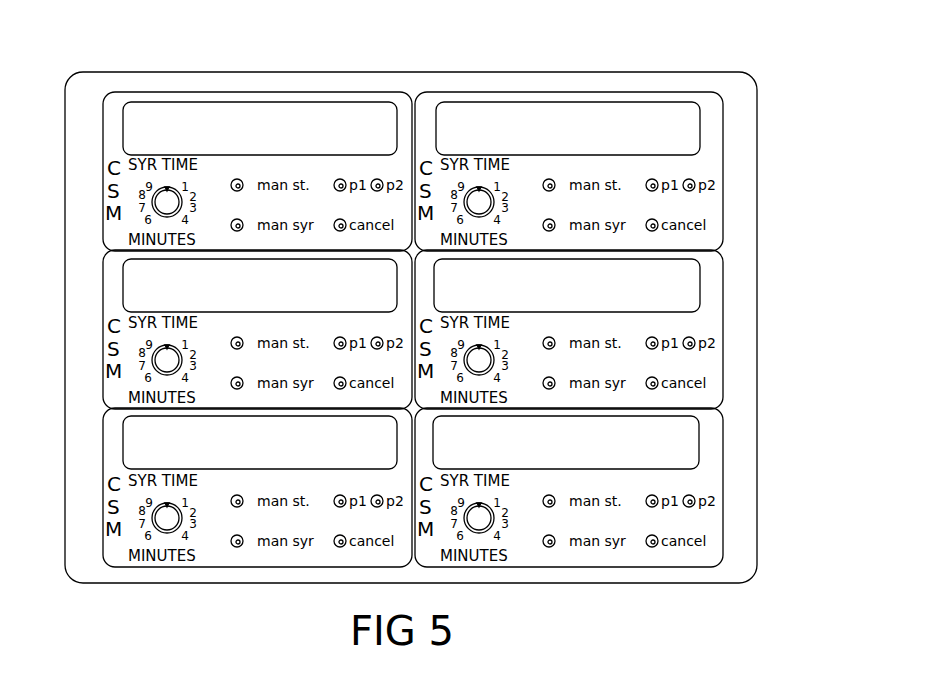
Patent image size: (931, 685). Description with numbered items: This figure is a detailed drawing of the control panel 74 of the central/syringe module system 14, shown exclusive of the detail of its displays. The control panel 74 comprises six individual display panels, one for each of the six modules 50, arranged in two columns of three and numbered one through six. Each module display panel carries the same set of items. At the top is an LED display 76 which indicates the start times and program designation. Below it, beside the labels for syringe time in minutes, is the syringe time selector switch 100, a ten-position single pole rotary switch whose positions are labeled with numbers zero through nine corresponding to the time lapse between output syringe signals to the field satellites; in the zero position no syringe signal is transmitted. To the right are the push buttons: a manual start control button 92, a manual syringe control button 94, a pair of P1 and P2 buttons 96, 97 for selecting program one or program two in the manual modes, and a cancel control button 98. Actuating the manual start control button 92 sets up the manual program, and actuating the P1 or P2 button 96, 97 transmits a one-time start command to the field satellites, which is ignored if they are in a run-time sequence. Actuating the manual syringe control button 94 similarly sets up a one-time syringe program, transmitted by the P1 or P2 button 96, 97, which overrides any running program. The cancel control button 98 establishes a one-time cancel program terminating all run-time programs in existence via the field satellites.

The central/syringe module system 14 is at (485, 72).
The control panel 74 is at (592, 77).
The module 50 is at (700, 95).
The LED display 76 is at (633, 107).
The manual start control button 92 is at (550, 179).
The manual syringe control button 94 is at (550, 547).
The P1 control button 96 is at (338, 506).
The P2 control button 97 is at (376, 507).
The cancel control button 98 is at (656, 380).
The syringe time selector switch 100 is at (162, 528).